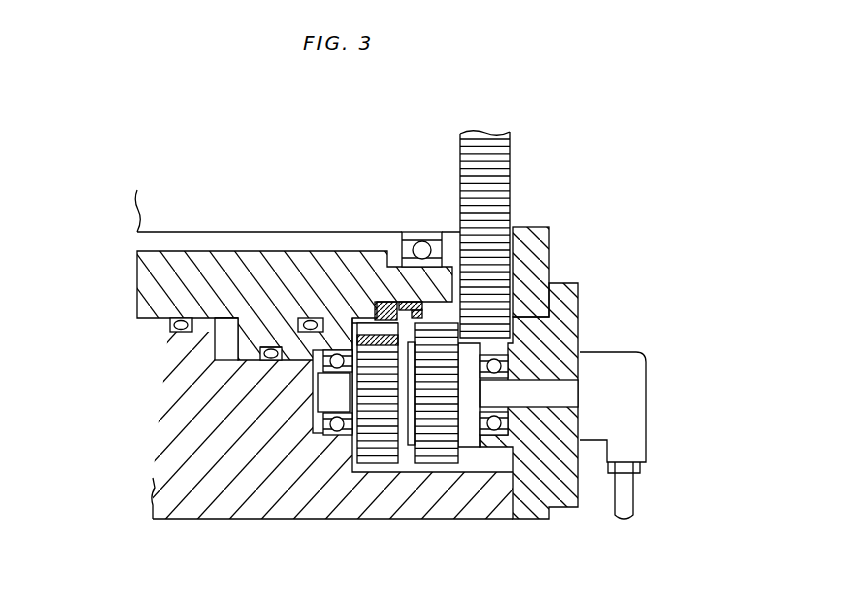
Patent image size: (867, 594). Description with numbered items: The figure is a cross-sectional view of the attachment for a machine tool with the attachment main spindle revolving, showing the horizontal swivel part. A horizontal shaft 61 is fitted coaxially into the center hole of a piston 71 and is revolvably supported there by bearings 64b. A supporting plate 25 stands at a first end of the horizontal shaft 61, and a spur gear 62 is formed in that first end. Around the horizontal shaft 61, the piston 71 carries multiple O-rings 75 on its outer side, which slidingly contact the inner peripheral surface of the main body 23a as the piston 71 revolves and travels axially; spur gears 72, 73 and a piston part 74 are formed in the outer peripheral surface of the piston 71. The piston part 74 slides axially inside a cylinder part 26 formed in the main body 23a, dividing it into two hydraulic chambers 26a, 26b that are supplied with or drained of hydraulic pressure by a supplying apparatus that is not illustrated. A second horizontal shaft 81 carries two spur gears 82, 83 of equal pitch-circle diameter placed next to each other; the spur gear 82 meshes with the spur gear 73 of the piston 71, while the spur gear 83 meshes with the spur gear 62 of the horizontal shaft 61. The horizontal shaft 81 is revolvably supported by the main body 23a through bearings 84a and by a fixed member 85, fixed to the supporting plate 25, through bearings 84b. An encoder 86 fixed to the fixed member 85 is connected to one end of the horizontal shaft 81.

The main body 23a is at (152, 492).
The supporting plate 25 is at (550, 228).
The cylinder part 26 is at (203, 300).
The hydraulic chamber 26a is at (218, 318).
The hydraulic chamber 26b is at (283, 345).
The horizontal shaft 61 is at (137, 205).
The spur gear 62 is at (508, 138).
The bearings 64b is at (418, 232).
The piston 71 is at (147, 280).
The spur gear 72 is at (402, 298).
The spur gear 73 is at (367, 303).
The piston part 74 is at (213, 345).
The O-rings 75 is at (168, 325).
The horizontal shaft 81 is at (333, 395).
The spur gear 82 is at (375, 463).
The spur gear 83 is at (438, 463).
The bearings 84a is at (337, 436).
The bearings 84b is at (498, 437).
The fixed member 85 is at (578, 305).
The encoder 86 is at (647, 382).